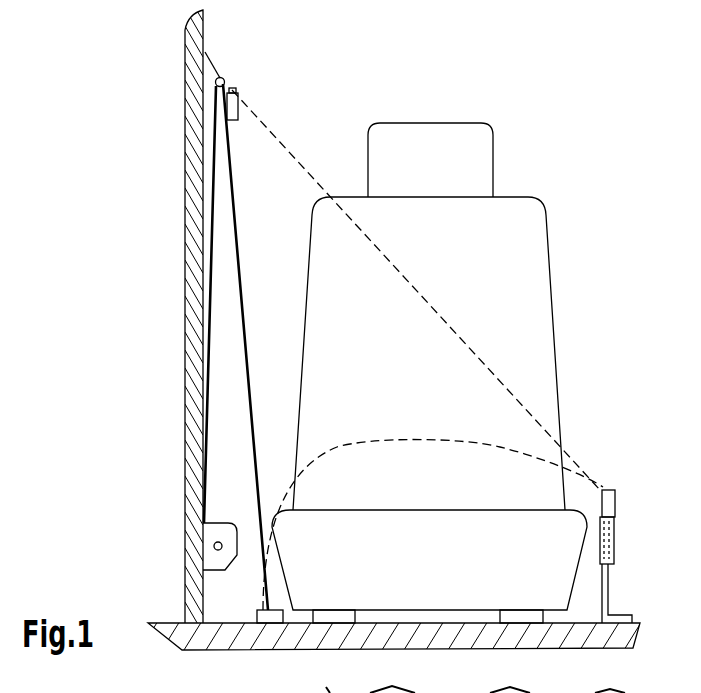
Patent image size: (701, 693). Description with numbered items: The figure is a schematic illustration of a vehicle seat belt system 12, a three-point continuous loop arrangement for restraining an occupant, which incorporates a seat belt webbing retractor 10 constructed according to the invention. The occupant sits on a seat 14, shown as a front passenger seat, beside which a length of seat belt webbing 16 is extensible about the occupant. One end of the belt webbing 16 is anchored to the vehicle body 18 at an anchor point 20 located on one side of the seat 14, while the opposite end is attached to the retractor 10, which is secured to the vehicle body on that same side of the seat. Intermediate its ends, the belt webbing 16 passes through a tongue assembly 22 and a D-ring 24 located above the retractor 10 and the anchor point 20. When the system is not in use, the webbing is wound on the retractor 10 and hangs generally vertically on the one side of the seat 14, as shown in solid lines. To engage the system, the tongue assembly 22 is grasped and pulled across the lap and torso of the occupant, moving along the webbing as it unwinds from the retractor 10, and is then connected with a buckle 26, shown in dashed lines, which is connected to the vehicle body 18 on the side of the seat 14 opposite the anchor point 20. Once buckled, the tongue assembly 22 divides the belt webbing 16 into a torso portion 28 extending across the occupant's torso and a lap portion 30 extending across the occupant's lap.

The seat belt webbing retractor 10 is at (200, 550).
The seat belt system 12 is at (455, 345).
The seat 14 is at (522, 212).
The seat belt webbing 16 is at (247, 327).
The vehicle body 18 is at (188, 643).
The anchor point 20 is at (275, 610).
The tongue assembly 22 is at (233, 103).
The D-ring 24 is at (205, 52).
The buckle 26 is at (612, 563).
The torso portion 28 is at (482, 352).
The lap portion 30 is at (452, 442).